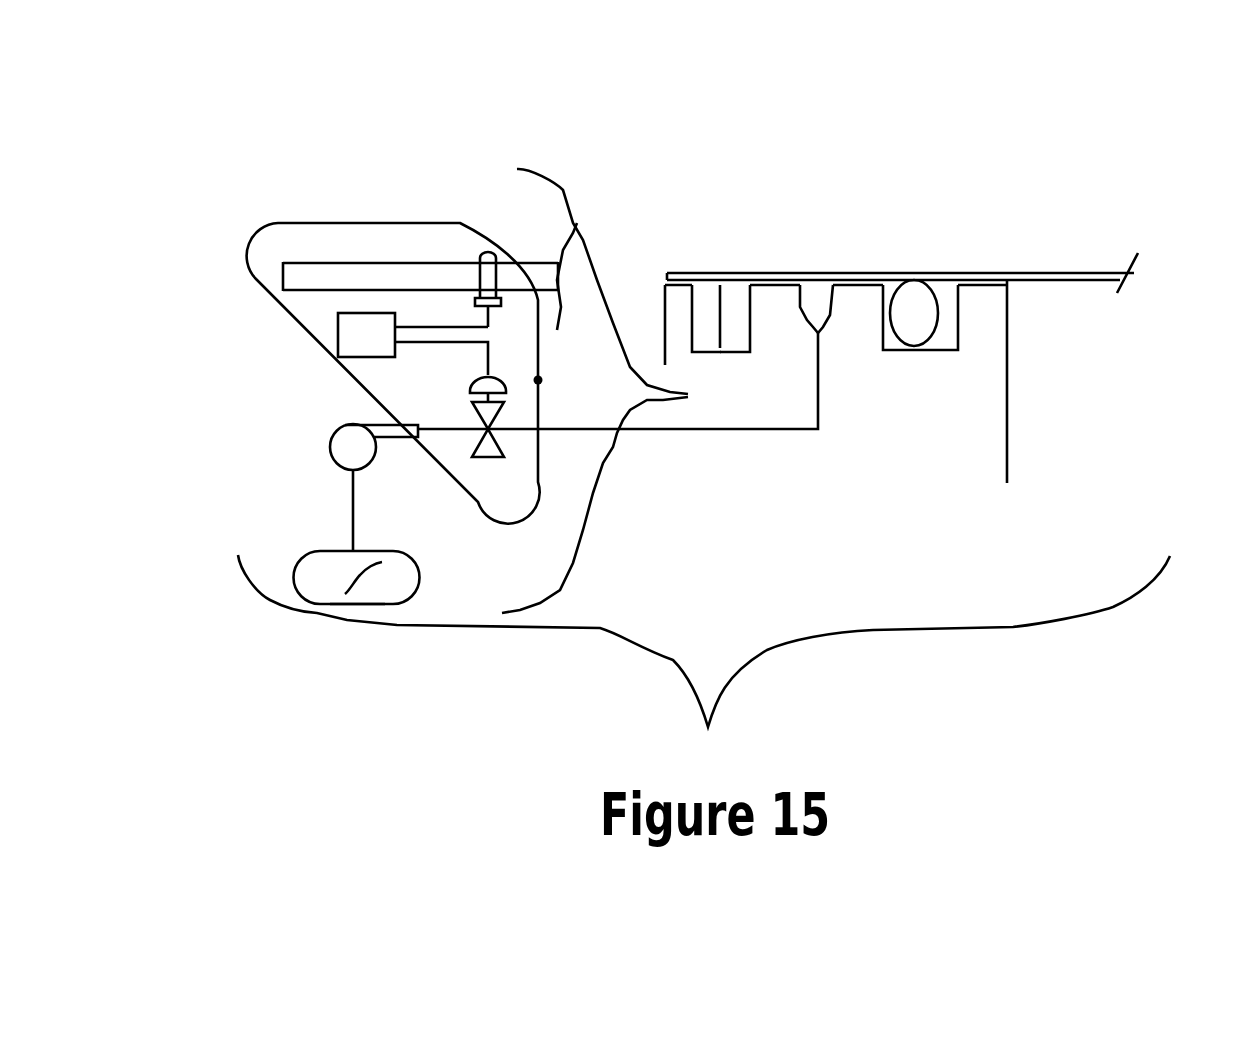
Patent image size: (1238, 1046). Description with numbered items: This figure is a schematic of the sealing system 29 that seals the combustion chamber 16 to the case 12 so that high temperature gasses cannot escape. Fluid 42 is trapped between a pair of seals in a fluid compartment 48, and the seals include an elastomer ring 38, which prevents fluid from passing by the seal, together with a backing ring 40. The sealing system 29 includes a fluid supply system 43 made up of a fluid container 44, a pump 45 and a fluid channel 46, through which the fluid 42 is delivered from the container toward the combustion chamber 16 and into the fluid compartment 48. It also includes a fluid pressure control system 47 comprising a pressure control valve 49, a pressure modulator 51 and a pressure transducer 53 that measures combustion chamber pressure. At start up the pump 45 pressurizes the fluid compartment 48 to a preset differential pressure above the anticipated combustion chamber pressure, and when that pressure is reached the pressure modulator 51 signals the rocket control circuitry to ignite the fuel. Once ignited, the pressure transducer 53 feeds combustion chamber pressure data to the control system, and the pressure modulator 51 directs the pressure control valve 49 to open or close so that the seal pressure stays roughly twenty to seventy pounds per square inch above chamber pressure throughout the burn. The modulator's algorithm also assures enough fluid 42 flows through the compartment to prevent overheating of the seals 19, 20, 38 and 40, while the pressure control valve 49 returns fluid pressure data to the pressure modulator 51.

The case 12 is at (927, 326).
The combustion chamber 16 is at (420, 215).
The seal 19 is at (827, 217).
The seal 20 is at (833, 243).
The sealing system 29 is at (704, 669).
The elastomer ring 38 is at (1039, 203).
The backing ring 40 is at (1036, 232).
The fluid 42 is at (290, 541).
The fluid supply system 43 is at (623, 391).
The fluid container 44 is at (272, 660).
The pump 45 is at (289, 433).
The fluid channel 46 is at (698, 452).
The fluid pressure control system 47 is at (500, 373).
The fluid compartment 48 is at (969, 429).
The pressure control valve 49 is at (597, 490).
The pressure modulator 51 is at (324, 272).
The pressure transducer 53 is at (390, 248).